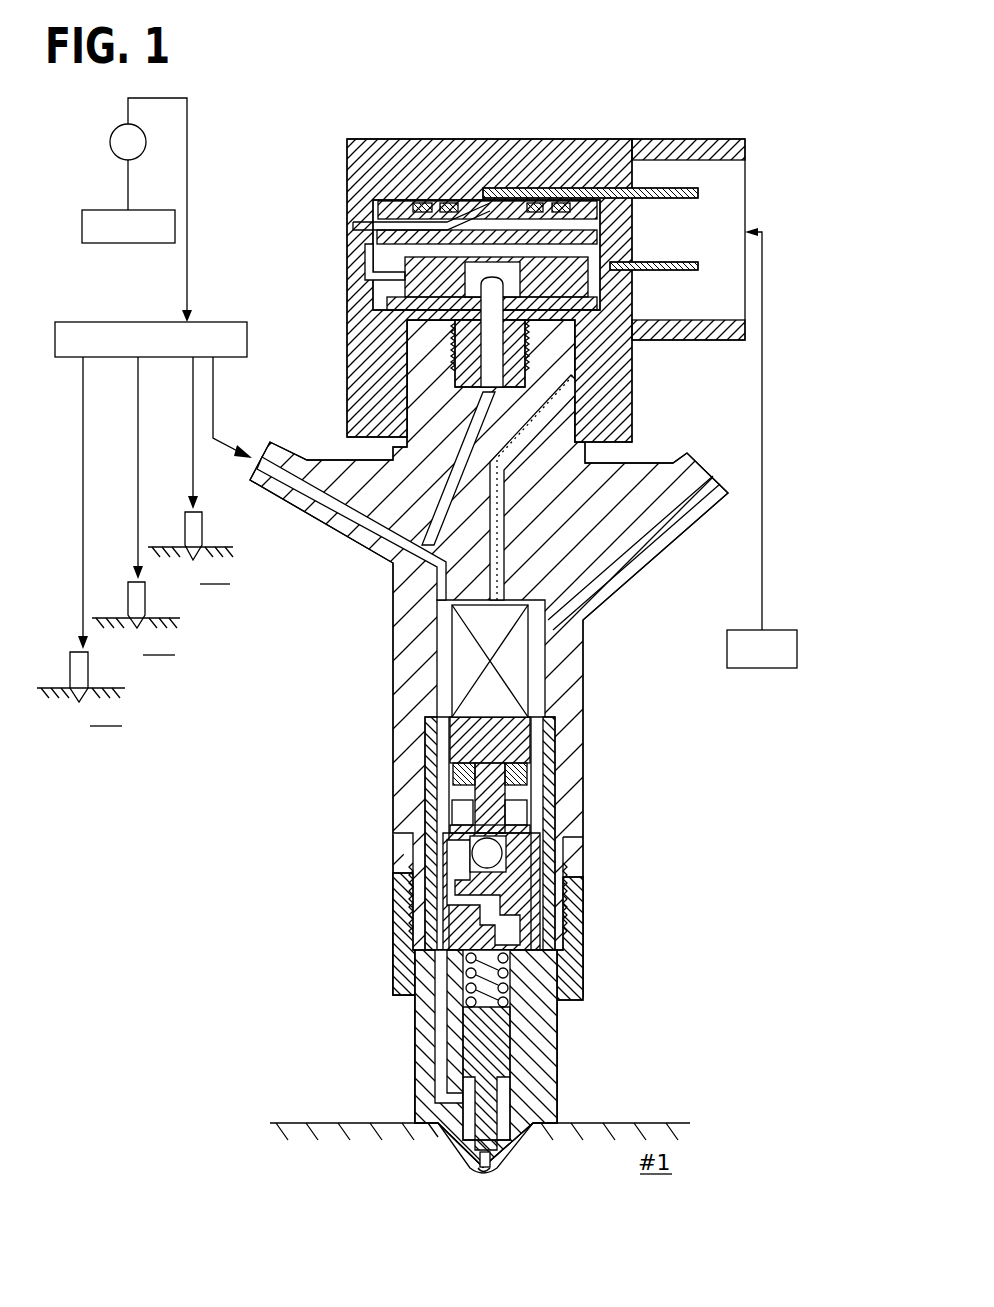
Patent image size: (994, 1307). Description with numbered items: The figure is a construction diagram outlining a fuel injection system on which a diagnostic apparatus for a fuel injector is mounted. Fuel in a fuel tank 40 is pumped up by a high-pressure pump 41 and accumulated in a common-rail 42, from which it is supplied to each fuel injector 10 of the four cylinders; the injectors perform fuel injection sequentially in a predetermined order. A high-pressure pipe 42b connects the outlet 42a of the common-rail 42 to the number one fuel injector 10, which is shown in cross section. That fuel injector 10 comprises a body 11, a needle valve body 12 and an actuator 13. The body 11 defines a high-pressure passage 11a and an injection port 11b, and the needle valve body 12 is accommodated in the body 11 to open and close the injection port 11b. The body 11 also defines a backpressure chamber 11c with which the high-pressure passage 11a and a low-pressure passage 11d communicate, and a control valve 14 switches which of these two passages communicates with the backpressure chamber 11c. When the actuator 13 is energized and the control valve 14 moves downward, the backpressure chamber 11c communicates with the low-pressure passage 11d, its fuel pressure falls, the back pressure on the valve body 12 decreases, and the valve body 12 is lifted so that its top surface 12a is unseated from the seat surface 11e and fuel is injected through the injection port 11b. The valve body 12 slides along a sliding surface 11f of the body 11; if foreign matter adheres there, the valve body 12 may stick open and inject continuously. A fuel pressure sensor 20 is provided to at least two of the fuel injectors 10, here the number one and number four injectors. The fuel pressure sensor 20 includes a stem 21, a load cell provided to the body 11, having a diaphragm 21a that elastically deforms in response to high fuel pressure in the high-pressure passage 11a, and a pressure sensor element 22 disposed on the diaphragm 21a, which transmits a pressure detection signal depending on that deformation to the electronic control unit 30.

The fuel injector 10 is at (185, 516).
The body 11 is at (407, 633).
The high-pressure passage 11a is at (330, 500).
The injection port 11b is at (497, 1172).
The backpressure chamber 11c is at (540, 950).
The low-pressure passage 11d is at (643, 530).
The seat surface 11e is at (480, 1170).
The sliding surface 11f is at (463, 1037).
The needle valve body 12 is at (500, 1050).
The top surface 12a is at (478, 1166).
The actuator 13 is at (470, 677).
The control valve 14 is at (492, 853).
The fuel pressure sensor 20 is at (499, 266).
The stem 21 is at (473, 360).
The diaphragm 21a is at (587, 346).
The pressure sensor element 22 is at (473, 197).
The electronic control unit 30 is at (775, 630).
The fuel tank 40 is at (130, 244).
The high-pressure pump 41 is at (142, 154).
The common-rail 42 is at (222, 322).
The outlet 42a is at (220, 360).
The high-pressure pipe 42b is at (215, 414).